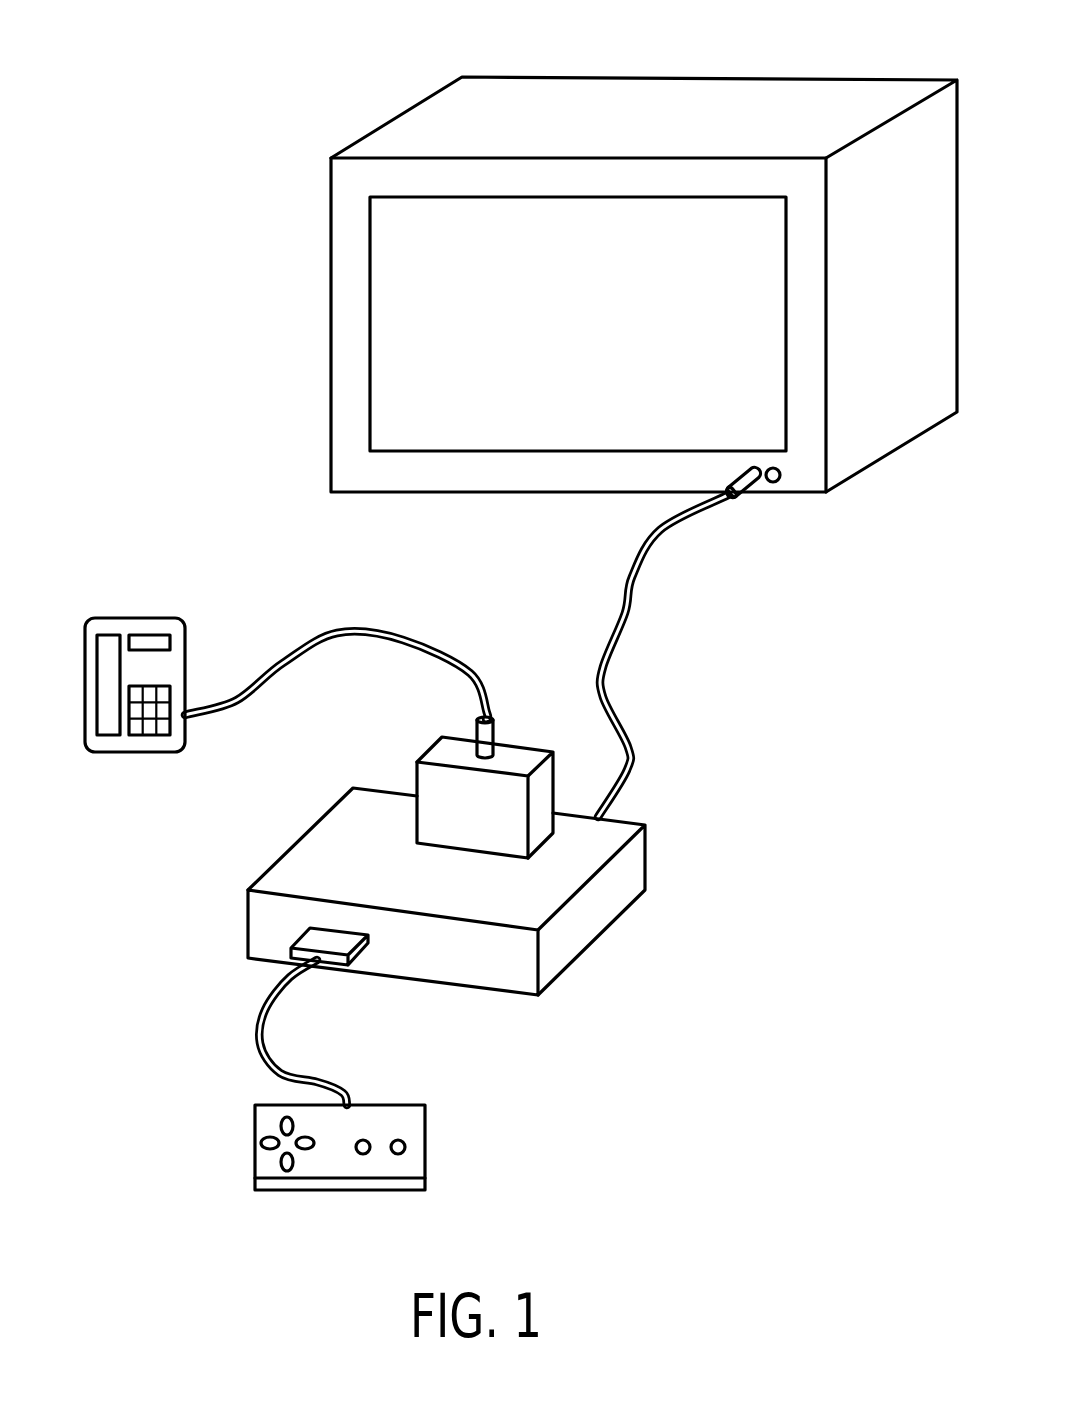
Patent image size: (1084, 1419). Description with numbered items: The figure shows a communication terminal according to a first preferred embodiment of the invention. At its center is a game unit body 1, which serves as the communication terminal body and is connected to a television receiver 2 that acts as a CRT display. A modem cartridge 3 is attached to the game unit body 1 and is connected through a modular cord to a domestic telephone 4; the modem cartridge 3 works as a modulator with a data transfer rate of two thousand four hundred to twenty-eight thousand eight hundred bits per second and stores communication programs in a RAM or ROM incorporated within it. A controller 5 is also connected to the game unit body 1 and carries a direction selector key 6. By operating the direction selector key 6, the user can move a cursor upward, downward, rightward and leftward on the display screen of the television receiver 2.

The game unit body 1 is at (597, 918).
The television receiver 2 is at (706, 97).
The modem cartridge 3 is at (520, 760).
The domestic telephone 4 is at (187, 642).
The controller 5 is at (366, 1173).
The direction selector key 6 is at (305, 1150).